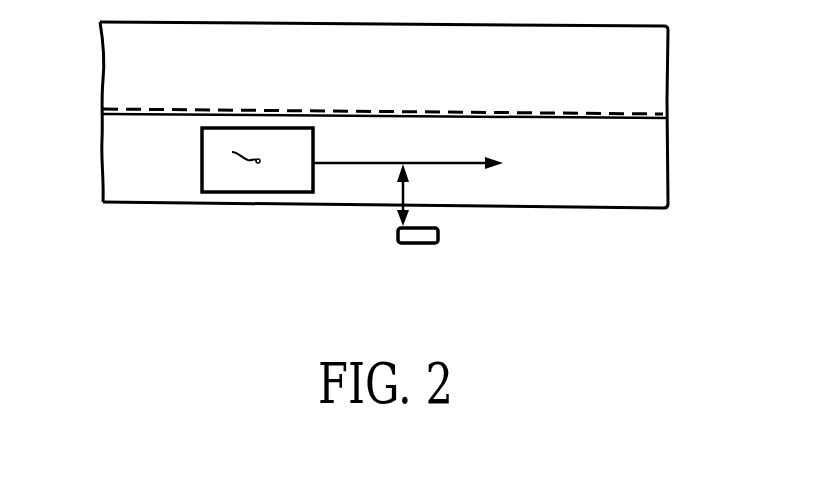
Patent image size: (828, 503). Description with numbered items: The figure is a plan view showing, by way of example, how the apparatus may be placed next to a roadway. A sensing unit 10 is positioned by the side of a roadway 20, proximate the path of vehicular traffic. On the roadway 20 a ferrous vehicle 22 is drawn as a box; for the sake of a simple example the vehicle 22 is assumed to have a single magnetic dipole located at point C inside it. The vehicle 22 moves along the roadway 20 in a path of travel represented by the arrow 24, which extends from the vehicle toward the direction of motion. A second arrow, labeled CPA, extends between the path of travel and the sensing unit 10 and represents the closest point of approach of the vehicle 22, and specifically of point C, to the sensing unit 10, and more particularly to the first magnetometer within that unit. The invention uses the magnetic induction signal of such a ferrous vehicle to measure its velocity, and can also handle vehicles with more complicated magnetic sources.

The sensing unit 10 is at (422, 244).
The roadway 20 is at (610, 201).
The ferrous vehicle 22 is at (202, 165).
The arrow 24 is at (387, 162).
The closest point of approach arrow CPA is at (408, 196).